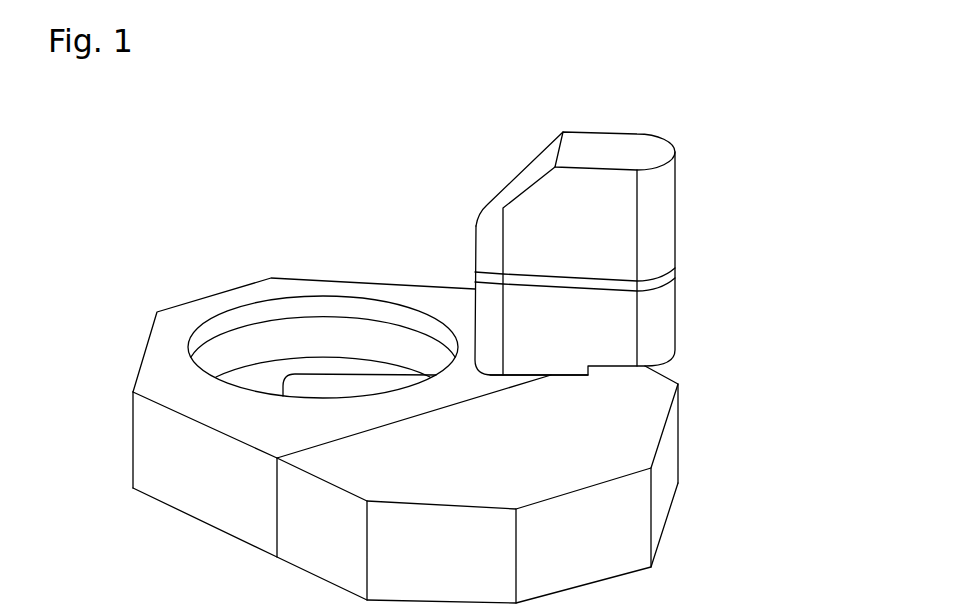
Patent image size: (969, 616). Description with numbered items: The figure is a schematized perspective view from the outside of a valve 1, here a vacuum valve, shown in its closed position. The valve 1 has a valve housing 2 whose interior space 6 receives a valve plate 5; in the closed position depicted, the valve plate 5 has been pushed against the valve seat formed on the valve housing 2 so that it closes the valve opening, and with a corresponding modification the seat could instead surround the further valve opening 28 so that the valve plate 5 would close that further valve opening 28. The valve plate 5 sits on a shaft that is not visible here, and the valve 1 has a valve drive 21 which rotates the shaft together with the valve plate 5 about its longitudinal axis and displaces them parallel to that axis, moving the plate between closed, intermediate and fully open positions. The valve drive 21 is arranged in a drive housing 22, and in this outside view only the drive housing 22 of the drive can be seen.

The valve 1 is at (750, 300).
The valve housing 2 is at (427, 300).
The valve plate 5 is at (267, 377).
The interior space 6 is at (202, 343).
The valve drive 21 is at (674, 91).
The drive housing 22 is at (657, 212).
The further valve opening 28 is at (324, 321).